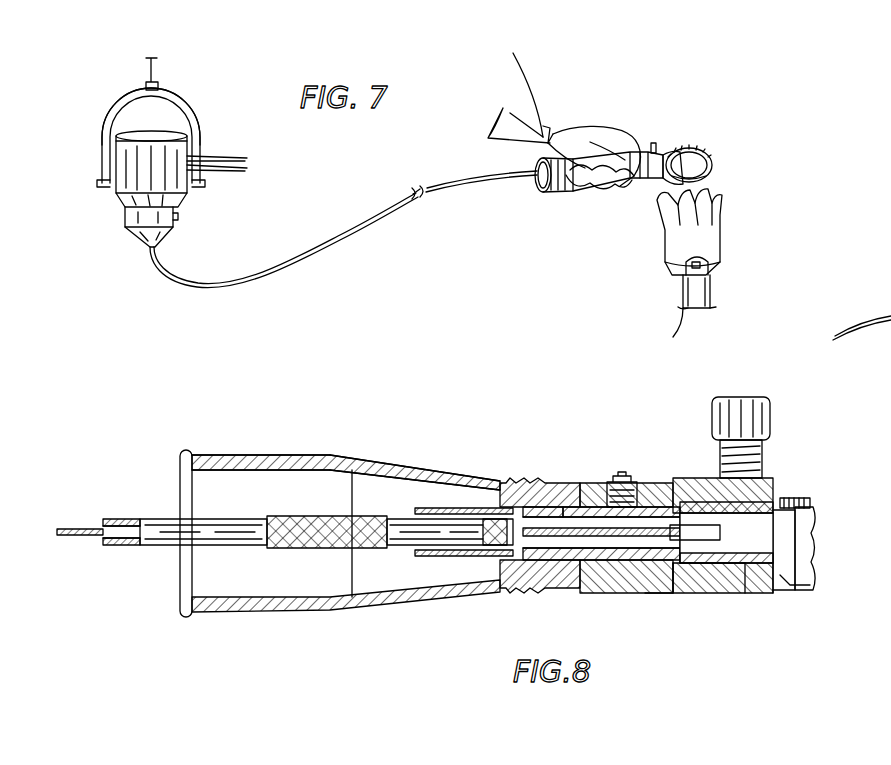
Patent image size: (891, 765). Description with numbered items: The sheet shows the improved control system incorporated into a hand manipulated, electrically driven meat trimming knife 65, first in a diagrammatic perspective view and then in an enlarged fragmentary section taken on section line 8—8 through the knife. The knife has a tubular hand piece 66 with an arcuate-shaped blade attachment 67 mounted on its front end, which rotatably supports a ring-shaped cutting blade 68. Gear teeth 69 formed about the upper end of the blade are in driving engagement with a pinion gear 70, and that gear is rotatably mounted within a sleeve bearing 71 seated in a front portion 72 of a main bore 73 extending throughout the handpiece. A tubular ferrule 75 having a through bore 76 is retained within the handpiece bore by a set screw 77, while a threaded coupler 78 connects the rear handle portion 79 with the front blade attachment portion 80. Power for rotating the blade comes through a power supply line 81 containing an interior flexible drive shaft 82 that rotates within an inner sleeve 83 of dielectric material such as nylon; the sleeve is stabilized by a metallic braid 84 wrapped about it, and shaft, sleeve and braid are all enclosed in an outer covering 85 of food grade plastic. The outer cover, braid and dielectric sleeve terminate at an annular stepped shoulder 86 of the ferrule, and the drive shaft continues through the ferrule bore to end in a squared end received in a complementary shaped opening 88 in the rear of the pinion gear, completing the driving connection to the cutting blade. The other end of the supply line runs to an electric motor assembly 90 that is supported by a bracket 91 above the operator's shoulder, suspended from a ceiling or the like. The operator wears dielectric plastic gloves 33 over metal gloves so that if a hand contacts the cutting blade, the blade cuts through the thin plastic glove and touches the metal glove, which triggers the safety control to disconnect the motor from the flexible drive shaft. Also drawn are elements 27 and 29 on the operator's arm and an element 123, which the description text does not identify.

In FIG. 7, the section line 8— 8 is at (510, 172).
In FIG. 7, the wrist strap 27 is at (688, 263).
In FIG. 7, the sleeve 29 is at (545, 118).
In FIG. 7, the dielectric plastic gloves 33 is at (601, 137).
In FIG. 7, the meat trimming knife 65 is at (684, 100).
In FIG. 8, the meat trimming knife 65 is at (398, 625).
In FIG. 7, the tubular hand piece 66 is at (546, 205).
In FIG. 8, the tubular hand piece 66 is at (432, 455).
In FIG. 7, the arcuate-shaped blade attachment 67 is at (666, 151).
In FIG. 8, the arcuate-shaped blade attachment 67 is at (814, 518).
In FIG. 7, the ring-shaped cutting blade 68 is at (712, 173).
In FIG. 8, the ring-shaped cutting blade 68 is at (800, 586).
In FIG. 7, the gear teeth 69 is at (704, 151).
In FIG. 8, the gear teeth 69 is at (812, 497).
In FIG. 8, the pinion gear 70 is at (770, 533).
In FIG. 8, the sleeve bearing 71 is at (706, 558).
In FIG. 8, the front portion of main bore 72 is at (752, 510).
In FIG. 8, the main bore 73 is at (633, 560).
In FIG. 8, the ferrule 75 is at (568, 508).
In FIG. 8, the through bore 76 is at (537, 545).
In FIG. 8, the set screw 77 is at (622, 487).
In FIG. 8, the threaded coupler 78 is at (518, 483).
In FIG. 8, the rear handle portion 79 is at (258, 456).
In FIG. 8, the front blade attachment portion 80 is at (680, 571).
In FIG. 7, the power supply line 81 is at (262, 284).
In FIG. 8, the flexible drive shaft 82 is at (614, 534).
In FIG. 8, the inner sleeve 83 is at (492, 534).
In FIG. 8, the metallic braid 84 is at (300, 549).
In FIG. 8, the outer covering 85 is at (345, 513).
In FIG. 8, the annular stepped shoulder 86 is at (533, 507).
In FIG. 8, the complementary shaped opening 88 is at (703, 537).
In FIG. 7, the electric motor assembly 90 is at (196, 203).
In FIG. 7, the bracket 91 is at (191, 111).
In FIG. 7, the strip 123 is at (864, 327).